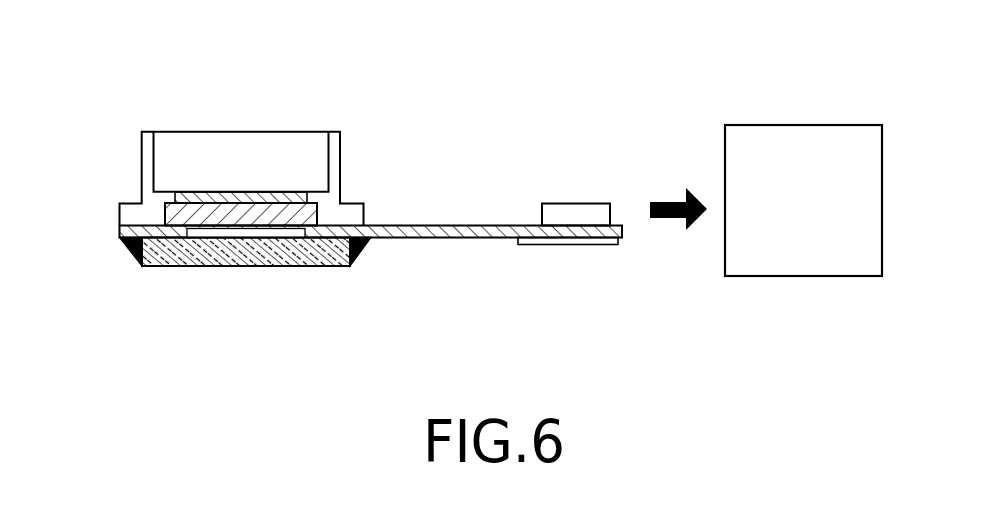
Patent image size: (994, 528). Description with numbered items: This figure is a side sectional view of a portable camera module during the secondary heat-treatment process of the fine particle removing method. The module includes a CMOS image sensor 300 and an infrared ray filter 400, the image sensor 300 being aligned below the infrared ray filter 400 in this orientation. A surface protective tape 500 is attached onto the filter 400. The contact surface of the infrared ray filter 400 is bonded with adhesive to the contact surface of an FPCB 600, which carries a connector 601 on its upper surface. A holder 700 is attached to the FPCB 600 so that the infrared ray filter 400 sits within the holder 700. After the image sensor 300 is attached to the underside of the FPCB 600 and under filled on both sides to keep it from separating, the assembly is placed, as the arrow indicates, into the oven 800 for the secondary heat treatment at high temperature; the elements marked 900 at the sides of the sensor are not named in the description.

The CMOS image sensor 300 is at (197, 263).
The infrared ray filter 400 is at (270, 220).
The tape 500 is at (215, 196).
The FPCB 600 is at (481, 238).
The connector 601 is at (572, 216).
The holder 700 is at (341, 149).
The oven 800 is at (800, 128).
The solder 900 is at (125, 252).